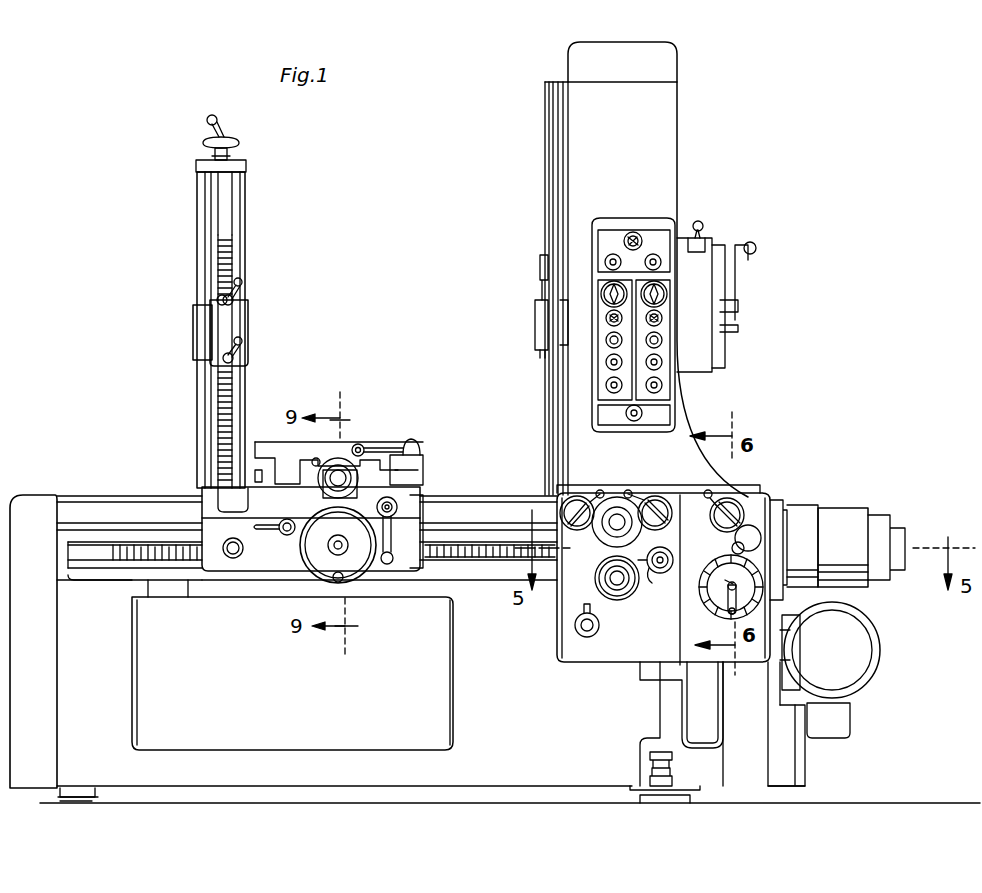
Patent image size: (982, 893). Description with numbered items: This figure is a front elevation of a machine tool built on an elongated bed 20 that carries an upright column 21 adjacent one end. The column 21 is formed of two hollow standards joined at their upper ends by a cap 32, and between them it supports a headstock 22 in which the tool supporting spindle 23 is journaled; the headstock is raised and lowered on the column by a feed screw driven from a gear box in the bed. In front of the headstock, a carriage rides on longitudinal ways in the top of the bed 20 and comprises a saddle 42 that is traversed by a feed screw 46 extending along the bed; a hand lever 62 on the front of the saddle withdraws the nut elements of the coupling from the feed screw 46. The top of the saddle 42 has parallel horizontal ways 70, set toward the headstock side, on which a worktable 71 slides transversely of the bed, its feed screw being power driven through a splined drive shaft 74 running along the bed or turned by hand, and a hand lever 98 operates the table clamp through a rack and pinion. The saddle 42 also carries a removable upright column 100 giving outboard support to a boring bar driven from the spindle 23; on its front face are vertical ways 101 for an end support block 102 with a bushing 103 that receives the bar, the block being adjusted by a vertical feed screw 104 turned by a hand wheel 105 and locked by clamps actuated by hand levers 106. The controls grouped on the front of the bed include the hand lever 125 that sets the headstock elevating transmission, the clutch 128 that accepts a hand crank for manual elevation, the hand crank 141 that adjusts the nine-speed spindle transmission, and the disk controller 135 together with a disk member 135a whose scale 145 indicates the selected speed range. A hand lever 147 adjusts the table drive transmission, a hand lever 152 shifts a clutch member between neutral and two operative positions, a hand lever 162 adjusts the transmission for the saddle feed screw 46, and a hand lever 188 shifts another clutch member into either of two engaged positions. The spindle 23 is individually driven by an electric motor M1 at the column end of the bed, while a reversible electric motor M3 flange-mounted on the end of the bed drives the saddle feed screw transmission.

The bed 20 is at (757, 747).
The column 21 is at (670, 160).
The headstock 22 is at (710, 350).
The spindle 23 is at (535, 320).
The cap 32 is at (668, 62).
The saddle 42 is at (202, 500).
The feed screw 46 is at (128, 562).
The hand lever 62 is at (277, 535).
The ways 70 is at (426, 470).
The worktable 71 is at (323, 448).
The drive shaft 74 is at (322, 480).
The hand lever 98 is at (395, 436).
The column 100 is at (197, 235).
The ways 101 is at (240, 420).
The end support block 102 is at (238, 320).
The bushing 103 is at (193, 335).
The feed screw 104 is at (235, 258).
The hand wheel 105 is at (250, 130).
The hand levers 106 is at (240, 350).
The hand lever 125 is at (648, 484).
The clutch 128 is at (619, 590).
The disk controller 135 is at (732, 549).
The disk member 135a is at (714, 602).
The hand crank 141 is at (725, 594).
The scale 145 is at (730, 596).
The hand lever 147 is at (592, 484).
The hand lever 152 is at (664, 572).
The hand lever 162 is at (712, 503).
The hand lever 188 is at (575, 622).
The electric motor M1 is at (880, 645).
The electric motor M3 is at (853, 517).